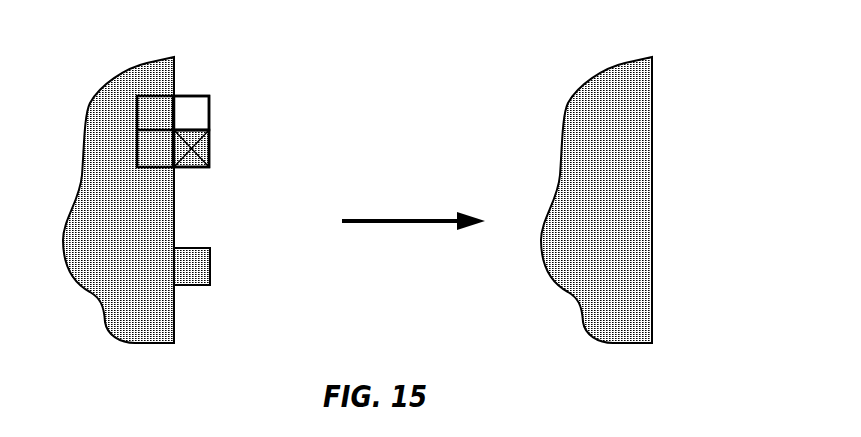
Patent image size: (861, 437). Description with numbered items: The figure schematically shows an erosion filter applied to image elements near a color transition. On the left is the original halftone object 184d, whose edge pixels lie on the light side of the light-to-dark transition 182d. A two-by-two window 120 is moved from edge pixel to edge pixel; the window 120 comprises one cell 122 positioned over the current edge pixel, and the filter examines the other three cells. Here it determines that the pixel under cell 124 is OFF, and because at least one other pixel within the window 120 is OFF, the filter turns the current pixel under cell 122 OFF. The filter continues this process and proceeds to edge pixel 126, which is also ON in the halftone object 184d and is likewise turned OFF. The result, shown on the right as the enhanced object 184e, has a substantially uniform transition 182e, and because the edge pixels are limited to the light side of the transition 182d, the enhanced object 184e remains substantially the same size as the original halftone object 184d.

The halftone object 184d is at (147, 63).
The light-to-dark transition 182d is at (175, 77).
The 2×2 window 120 is at (207, 95).
The cell 124 is at (209, 113).
The cell 122 is at (193, 167).
The edge pixel 126 is at (192, 285).
The enhanced object 184e is at (613, 65).
The substantially uniform transition 182e is at (653, 83).